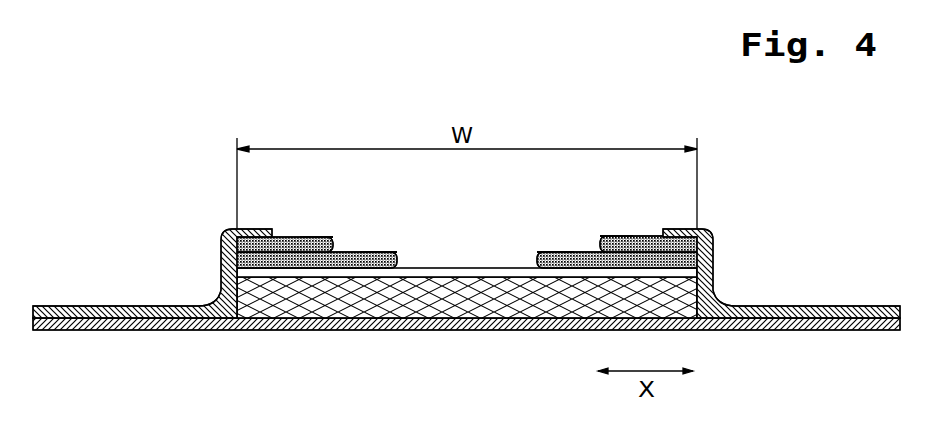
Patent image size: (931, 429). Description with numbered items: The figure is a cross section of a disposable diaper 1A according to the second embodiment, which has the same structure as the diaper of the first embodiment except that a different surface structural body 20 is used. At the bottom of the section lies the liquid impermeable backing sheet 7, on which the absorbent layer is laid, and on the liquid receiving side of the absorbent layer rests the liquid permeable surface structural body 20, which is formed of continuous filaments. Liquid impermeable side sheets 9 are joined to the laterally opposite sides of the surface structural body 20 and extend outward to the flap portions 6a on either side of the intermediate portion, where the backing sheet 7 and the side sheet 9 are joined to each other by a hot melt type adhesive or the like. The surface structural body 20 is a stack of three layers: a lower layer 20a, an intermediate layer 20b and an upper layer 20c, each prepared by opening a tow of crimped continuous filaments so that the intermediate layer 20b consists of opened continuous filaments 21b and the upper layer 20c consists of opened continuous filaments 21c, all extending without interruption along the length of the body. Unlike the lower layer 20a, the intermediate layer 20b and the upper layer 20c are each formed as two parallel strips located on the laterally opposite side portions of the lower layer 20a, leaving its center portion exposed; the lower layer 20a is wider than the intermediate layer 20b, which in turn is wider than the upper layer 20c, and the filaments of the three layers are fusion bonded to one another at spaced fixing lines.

The disposable diaper 1A is at (718, 174).
The flap portion 6a is at (111, 334).
The liquid impermeable backing sheet 7 is at (522, 331).
The liquid impermeable side sheet 9 is at (152, 305).
The surface structural body 20 is at (470, 249).
The lower layer 20a is at (453, 274).
The intermediate layer 20b is at (353, 252).
The upper layer 20c is at (280, 237).
The continuous filaments 21b is at (388, 254).
The continuous filaments 21c is at (310, 237).